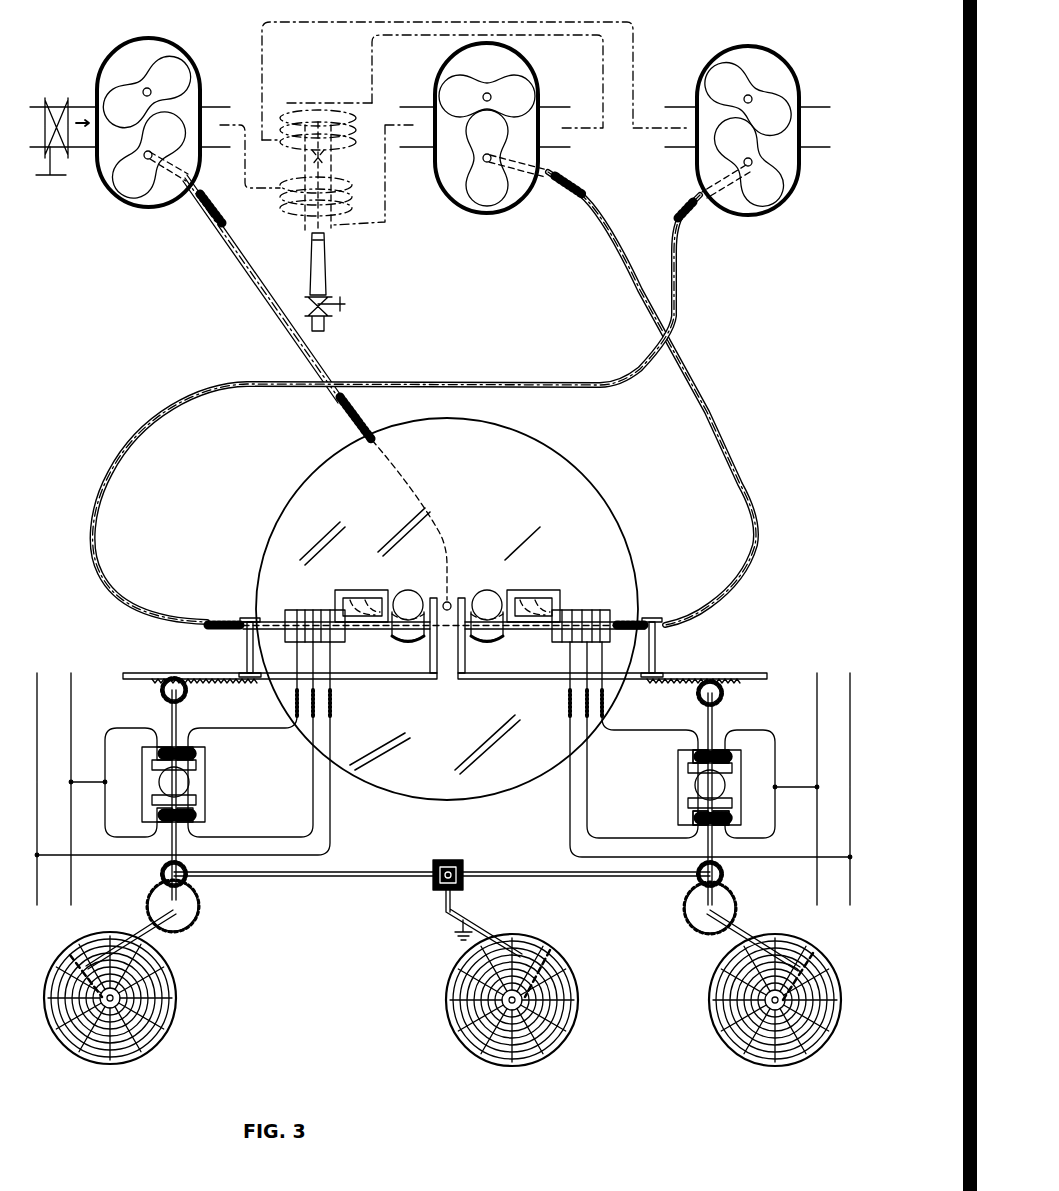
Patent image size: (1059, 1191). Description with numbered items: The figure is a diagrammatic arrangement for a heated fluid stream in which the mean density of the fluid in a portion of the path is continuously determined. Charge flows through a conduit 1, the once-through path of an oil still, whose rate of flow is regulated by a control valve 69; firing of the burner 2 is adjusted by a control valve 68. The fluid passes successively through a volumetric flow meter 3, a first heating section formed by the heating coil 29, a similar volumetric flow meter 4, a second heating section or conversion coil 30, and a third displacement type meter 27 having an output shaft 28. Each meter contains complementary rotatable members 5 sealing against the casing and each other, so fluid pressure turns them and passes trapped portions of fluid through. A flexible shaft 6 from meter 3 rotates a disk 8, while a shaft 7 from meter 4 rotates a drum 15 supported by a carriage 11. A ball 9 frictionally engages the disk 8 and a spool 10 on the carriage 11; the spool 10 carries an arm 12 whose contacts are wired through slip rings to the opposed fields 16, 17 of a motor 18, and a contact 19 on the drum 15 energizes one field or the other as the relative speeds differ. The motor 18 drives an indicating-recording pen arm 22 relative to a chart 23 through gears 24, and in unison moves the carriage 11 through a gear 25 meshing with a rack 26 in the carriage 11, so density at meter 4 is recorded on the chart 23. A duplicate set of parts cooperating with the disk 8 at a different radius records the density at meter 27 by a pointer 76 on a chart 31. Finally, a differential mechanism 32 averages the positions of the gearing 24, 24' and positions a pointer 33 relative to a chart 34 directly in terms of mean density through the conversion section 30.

The conduit 1 is at (75, 147).
The burner 2 is at (326, 255).
The volumetric flow meter 3 is at (96, 183).
The volumetric flow meter 4 is at (520, 195).
The rotatable members 5 is at (130, 152).
The flexible shaft 6 is at (200, 210).
The shaft 7 is at (630, 270).
The disk 8 is at (606, 503).
The ball 9 is at (490, 590).
The spool 10 is at (492, 640).
The carriage 11 is at (468, 685).
The arm 12 is at (522, 590).
The drum 15 is at (588, 610).
The field 16 is at (690, 752).
The field 17 is at (690, 822).
The motor 18 is at (743, 790).
The contact 19 is at (548, 590).
The pen arm 22 is at (778, 932).
The chart 23 is at (816, 940).
The gears 24 is at (723, 898).
The gearing 24' is at (159, 897).
The gear 25 is at (723, 695).
The rack 26 is at (676, 688).
The displacement type meter 27 is at (790, 195).
The output shaft 28 is at (117, 450).
The heating coil 29 is at (329, 196).
The heating coil 30 is at (329, 171).
The chart 31 is at (82, 940).
The differential mechanism 32 is at (466, 890).
The pointer 33 is at (480, 918).
The chart 34 is at (545, 945).
The control valve 68 is at (345, 304).
The control valve 69 is at (60, 178).
The pointer 76 is at (135, 918).